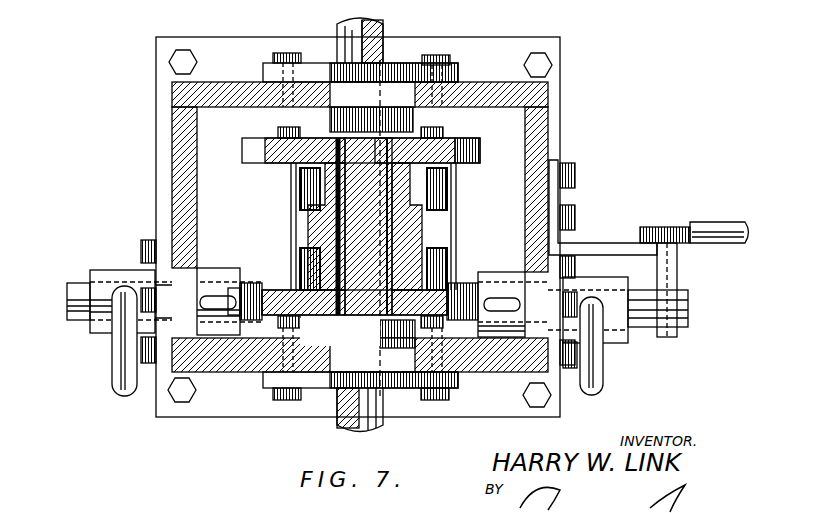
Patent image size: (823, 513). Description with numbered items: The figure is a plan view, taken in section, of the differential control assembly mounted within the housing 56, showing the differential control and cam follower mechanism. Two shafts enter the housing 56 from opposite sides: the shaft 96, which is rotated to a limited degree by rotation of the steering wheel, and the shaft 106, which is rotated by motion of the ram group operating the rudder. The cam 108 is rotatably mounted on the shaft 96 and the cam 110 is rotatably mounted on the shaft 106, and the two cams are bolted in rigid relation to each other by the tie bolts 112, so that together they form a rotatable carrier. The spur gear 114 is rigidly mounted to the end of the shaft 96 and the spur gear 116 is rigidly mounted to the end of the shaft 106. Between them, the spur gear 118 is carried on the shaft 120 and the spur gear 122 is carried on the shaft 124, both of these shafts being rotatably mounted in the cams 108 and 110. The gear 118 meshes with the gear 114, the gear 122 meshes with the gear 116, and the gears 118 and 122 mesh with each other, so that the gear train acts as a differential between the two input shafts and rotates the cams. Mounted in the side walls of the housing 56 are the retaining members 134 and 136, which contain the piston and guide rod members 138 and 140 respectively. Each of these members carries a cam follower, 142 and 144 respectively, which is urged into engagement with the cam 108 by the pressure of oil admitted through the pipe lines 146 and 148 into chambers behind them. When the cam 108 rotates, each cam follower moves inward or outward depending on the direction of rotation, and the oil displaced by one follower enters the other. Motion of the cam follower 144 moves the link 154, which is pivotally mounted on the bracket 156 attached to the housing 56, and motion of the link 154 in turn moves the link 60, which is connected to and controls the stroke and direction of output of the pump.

The housing 56 is at (176, 157).
The link 60 is at (730, 228).
The shaft 96 is at (342, 420).
The shaft 106 is at (344, 24).
The cam 108 is at (272, 290).
The cam 110 is at (256, 150).
The tie bolts 112 is at (292, 212).
The spur gear 114 is at (305, 262).
The spur gear 116 is at (300, 186).
The spur gear 118 is at (312, 232).
The shaft 120 is at (340, 316).
The spur gear 122 is at (415, 230).
The shaft 124 is at (375, 316).
The retaining member 134 is at (110, 272).
The retaining member 136 is at (618, 322).
The piston and guide rod member 138 is at (67, 297).
The piston and guide rod member 140 is at (688, 316).
The cam follower 142 is at (250, 325).
The cam follower 144 is at (490, 338).
The pipe line 146 is at (120, 378).
The pipe line 148 is at (600, 358).
The link 154 is at (652, 236).
The bracket 156 is at (612, 250).